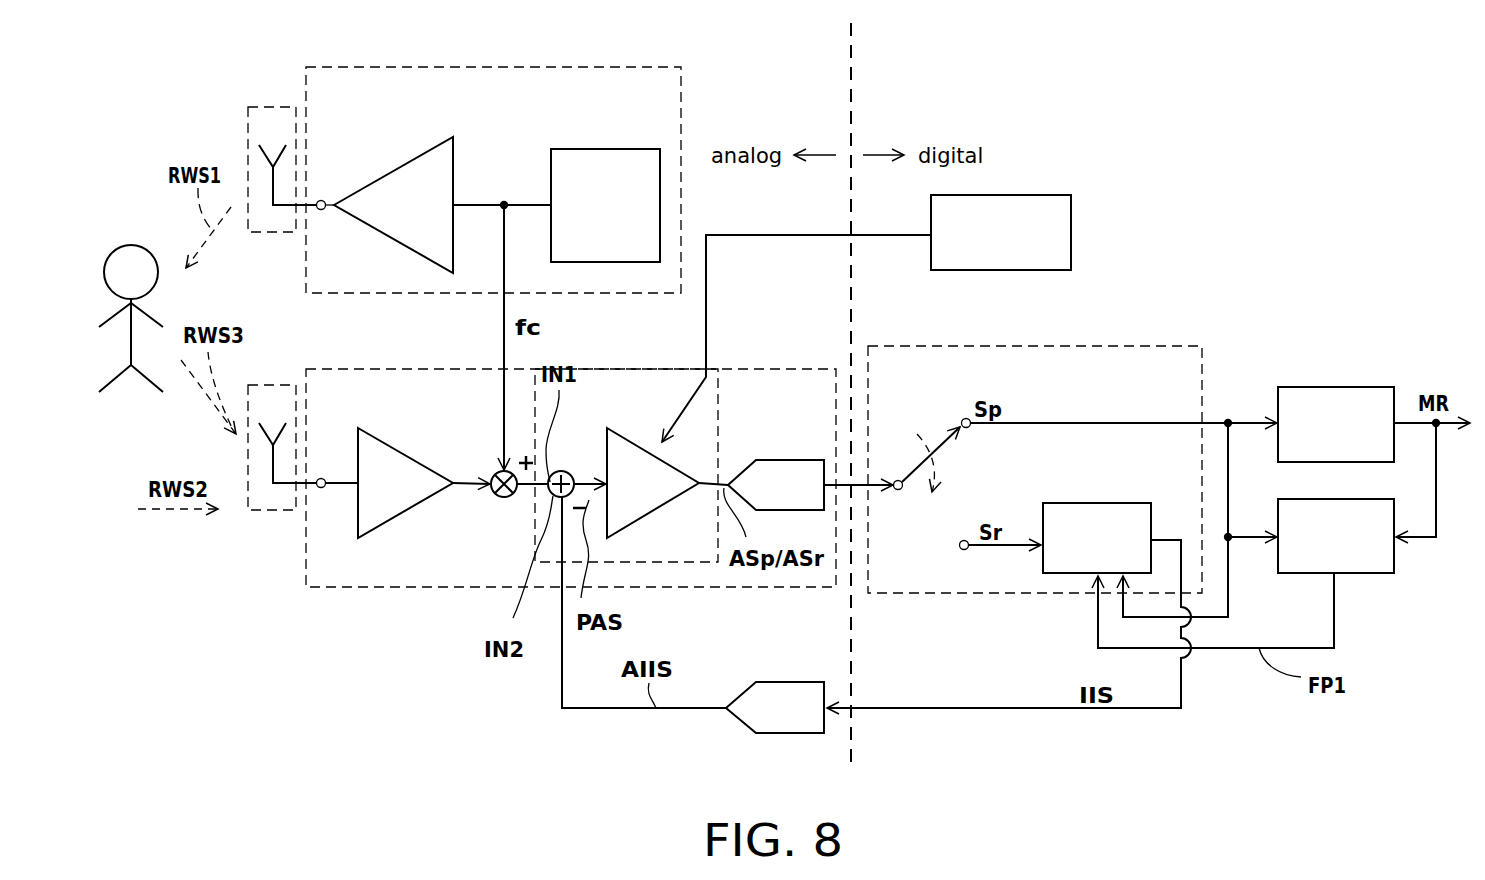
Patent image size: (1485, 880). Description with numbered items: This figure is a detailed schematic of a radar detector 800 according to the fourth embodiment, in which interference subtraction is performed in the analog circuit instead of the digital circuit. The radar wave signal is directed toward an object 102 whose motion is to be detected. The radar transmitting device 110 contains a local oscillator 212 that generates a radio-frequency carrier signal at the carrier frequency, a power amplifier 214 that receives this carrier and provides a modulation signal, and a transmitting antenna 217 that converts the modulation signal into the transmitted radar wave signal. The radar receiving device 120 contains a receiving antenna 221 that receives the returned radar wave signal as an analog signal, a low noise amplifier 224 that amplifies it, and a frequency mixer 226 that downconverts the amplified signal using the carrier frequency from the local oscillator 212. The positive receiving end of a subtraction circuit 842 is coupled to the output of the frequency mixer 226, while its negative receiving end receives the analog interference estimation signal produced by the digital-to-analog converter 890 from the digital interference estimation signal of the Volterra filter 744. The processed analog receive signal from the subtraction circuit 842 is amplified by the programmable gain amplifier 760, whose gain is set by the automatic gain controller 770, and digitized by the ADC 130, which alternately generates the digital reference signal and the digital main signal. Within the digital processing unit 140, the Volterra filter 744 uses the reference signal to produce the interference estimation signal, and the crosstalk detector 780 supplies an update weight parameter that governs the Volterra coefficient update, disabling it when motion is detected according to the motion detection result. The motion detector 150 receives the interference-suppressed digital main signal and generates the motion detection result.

The user / human body 102 is at (130, 245).
The radar transmitting device 110 is at (525, 67).
The radar receiving device 120 is at (343, 368).
The ADC 130 is at (790, 460).
The digital processing unit 140 is at (1062, 346).
The motion detector 150 is at (1333, 387).
The local oscillator 212 is at (585, 149).
The power amplifier 214 is at (452, 153).
The transmitting antenna 217 is at (270, 104).
The receiving antenna 221 is at (270, 383).
The low noise amplifier 224 is at (402, 450).
The frequency mixer 226 is at (491, 496).
The Volterra filter 744 is at (1065, 503).
The programmable gain amplifier 760 is at (638, 440).
The automatic gain controller 770 is at (1000, 195).
The crosstalk detector 780 is at (1360, 573).
The subtraction circuit 842 is at (573, 474).
The digital-to-analog converter 890 is at (785, 682).
The radar detector 800 is at (1425, 773).